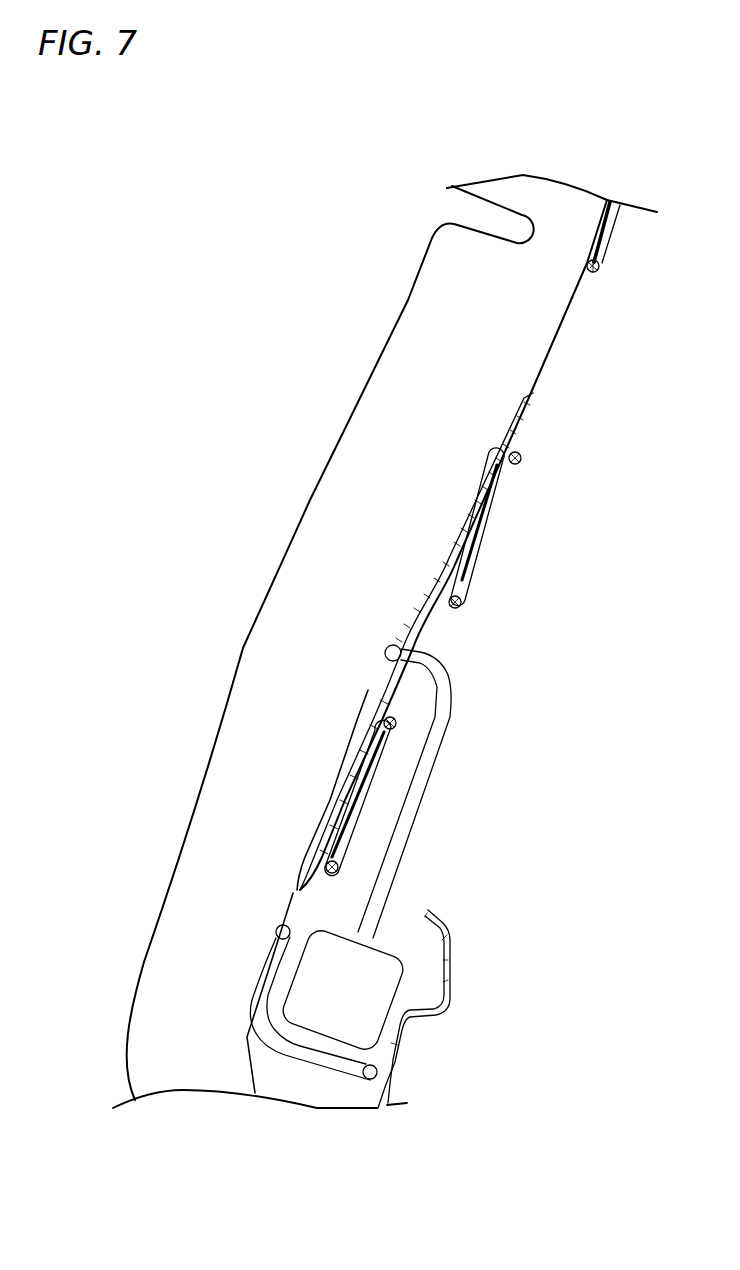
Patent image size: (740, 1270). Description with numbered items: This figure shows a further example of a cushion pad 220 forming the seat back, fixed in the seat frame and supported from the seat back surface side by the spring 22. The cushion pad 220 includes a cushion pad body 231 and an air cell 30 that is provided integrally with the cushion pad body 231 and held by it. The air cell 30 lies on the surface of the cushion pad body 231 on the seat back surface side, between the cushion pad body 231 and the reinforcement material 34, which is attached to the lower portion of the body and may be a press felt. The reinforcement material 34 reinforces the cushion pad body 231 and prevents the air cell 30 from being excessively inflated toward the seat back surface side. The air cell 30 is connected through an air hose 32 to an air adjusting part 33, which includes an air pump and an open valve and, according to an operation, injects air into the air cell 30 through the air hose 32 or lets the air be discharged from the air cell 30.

The cushion pad 220 is at (443, 219).
The cushion pad body 231 is at (433, 330).
The air cell 30 is at (477, 483).
The reinforcement material 34 is at (523, 417).
The spring 22 is at (497, 523).
The air hose 32 is at (440, 735).
The air adjusting part 33 is at (370, 1010).